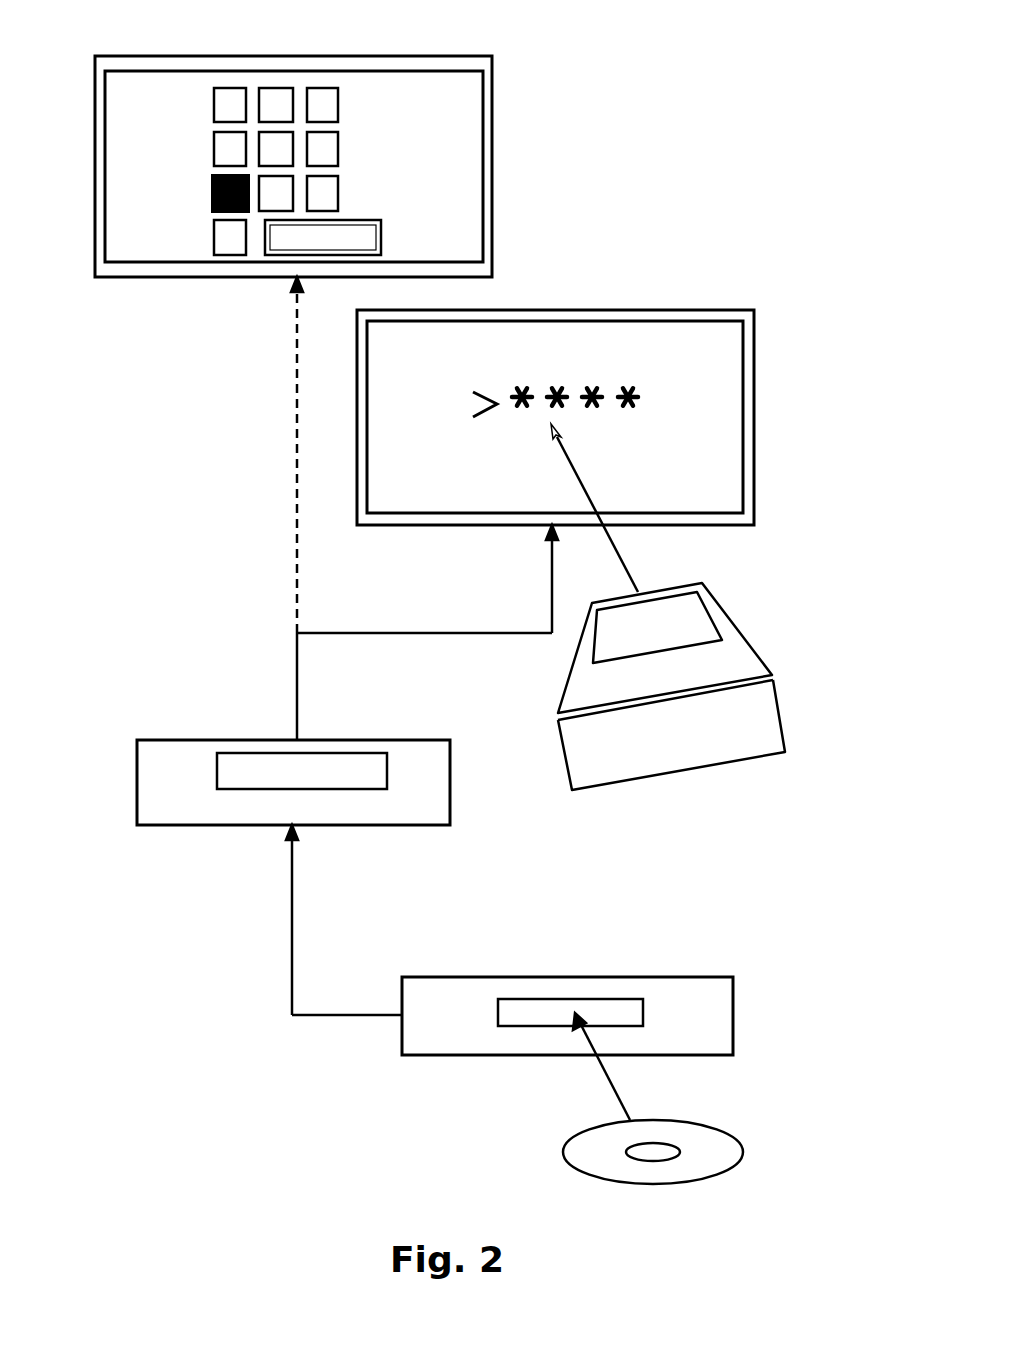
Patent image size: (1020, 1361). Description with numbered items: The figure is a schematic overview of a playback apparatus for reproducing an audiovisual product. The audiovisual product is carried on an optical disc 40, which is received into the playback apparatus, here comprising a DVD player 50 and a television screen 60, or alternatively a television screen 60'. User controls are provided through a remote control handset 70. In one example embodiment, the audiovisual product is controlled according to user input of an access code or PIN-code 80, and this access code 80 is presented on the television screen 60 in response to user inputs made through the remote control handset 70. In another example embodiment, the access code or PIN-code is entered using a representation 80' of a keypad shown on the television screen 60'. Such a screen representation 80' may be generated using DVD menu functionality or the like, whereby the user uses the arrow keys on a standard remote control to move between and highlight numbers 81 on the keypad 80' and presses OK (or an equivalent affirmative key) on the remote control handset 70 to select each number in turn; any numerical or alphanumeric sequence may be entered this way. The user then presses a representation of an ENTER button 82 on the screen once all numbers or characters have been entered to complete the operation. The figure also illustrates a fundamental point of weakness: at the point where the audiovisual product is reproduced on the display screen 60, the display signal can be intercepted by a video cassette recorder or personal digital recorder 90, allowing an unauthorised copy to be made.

The optical disc 40 is at (690, 1170).
The DVD player 50 is at (687, 982).
The television screen 60 is at (586, 417).
The television screen 60' is at (329, 166).
The remote control handset 70 is at (750, 657).
The access code or PIN-code 80 is at (589, 336).
The representation of a keypad 80' is at (329, 131).
The numbers 81 is at (212, 200).
The ENTER button 82 is at (265, 250).
The video cassette recorder or personal digital recorder 90 is at (413, 792).